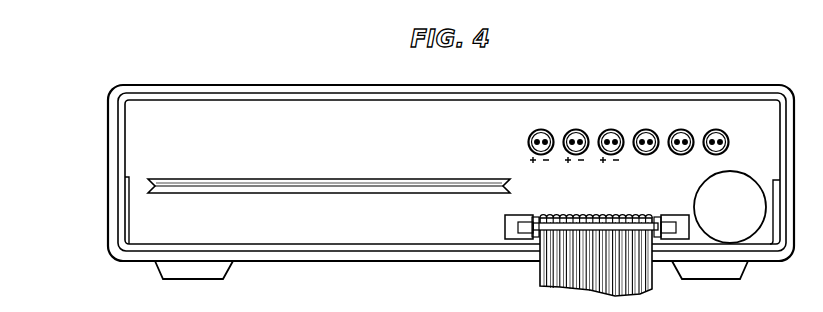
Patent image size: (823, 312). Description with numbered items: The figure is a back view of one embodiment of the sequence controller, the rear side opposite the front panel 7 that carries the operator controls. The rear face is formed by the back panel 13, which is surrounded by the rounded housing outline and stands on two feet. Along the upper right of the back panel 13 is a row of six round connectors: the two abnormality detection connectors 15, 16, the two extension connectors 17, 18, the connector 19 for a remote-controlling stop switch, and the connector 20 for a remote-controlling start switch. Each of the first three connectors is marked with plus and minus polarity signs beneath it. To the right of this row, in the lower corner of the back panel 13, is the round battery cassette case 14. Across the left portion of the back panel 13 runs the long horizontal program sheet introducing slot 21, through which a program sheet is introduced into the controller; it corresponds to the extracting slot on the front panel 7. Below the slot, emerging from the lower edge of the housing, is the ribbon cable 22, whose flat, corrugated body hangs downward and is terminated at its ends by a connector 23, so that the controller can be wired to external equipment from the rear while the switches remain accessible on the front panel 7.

The front panel 7 is at (328, 86).
The back panel 13 is at (266, 121).
The battery cassette case 14 is at (751, 173).
The abnormality detection connector 15 is at (548, 131).
The abnormality detection connector 16 is at (583, 131).
The extension connector 17 is at (618, 131).
The extension connector 18 is at (653, 131).
The connector for a remote-controlling stop switch 19 is at (688, 131).
The connector for a remote-controlling start switch 20 is at (723, 131).
The program sheet introducing slot 21 is at (338, 181).
The ribbon cable 22 is at (585, 282).
The connector 23 is at (520, 239).